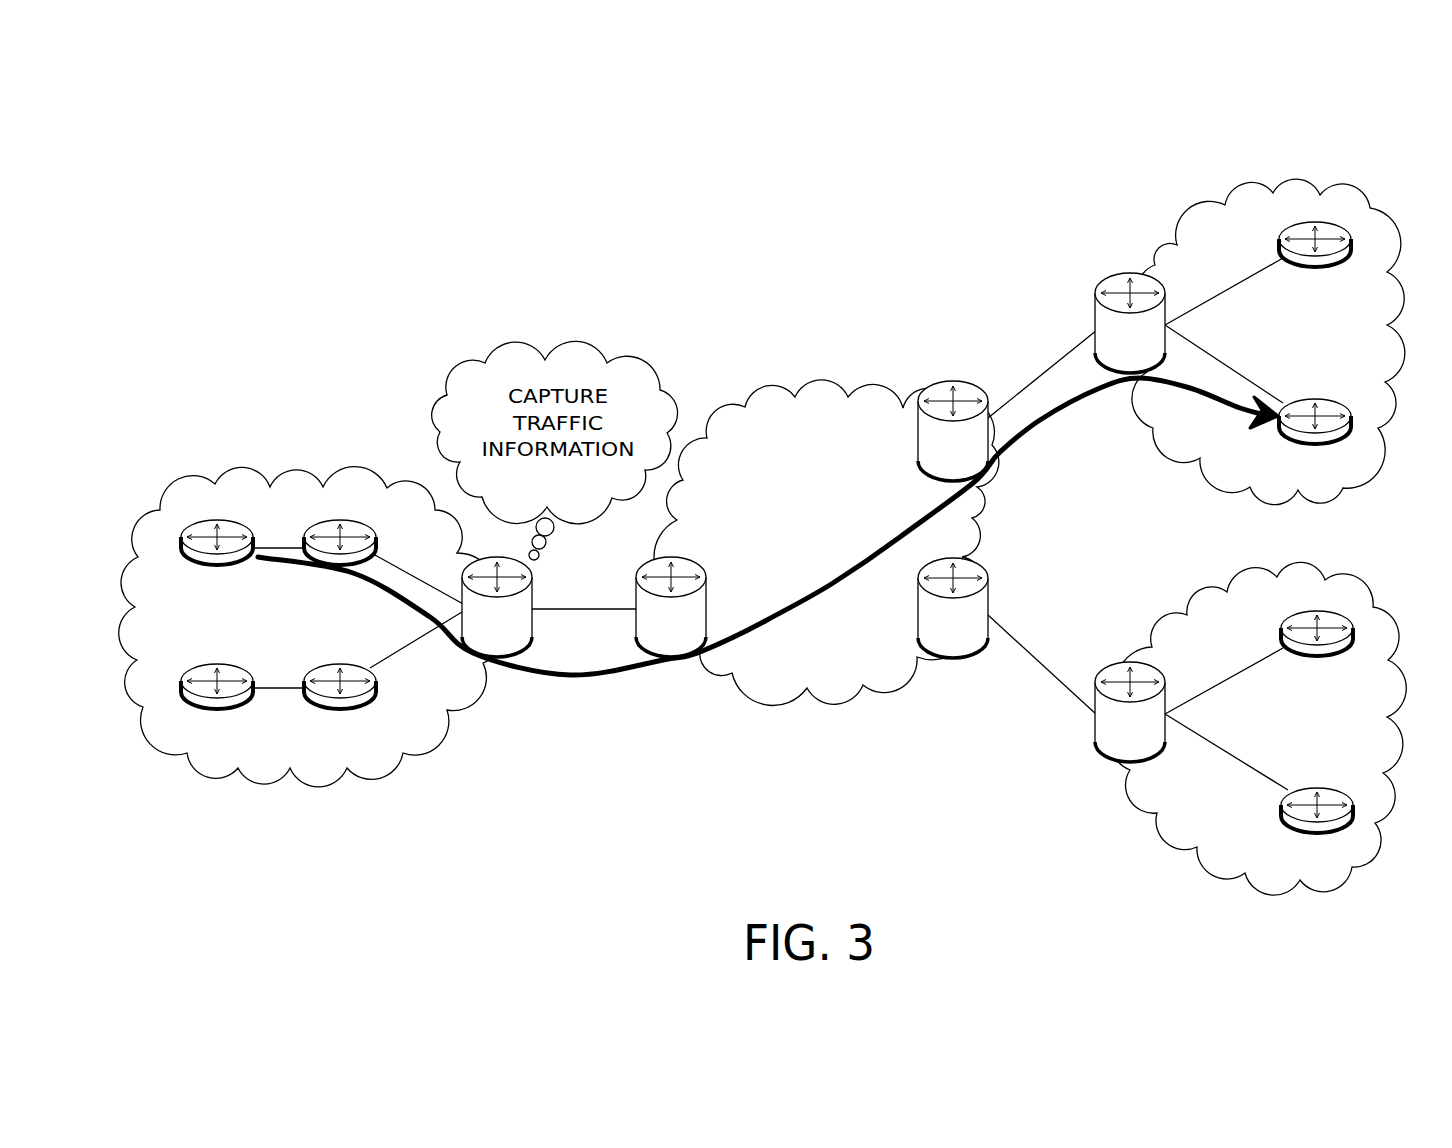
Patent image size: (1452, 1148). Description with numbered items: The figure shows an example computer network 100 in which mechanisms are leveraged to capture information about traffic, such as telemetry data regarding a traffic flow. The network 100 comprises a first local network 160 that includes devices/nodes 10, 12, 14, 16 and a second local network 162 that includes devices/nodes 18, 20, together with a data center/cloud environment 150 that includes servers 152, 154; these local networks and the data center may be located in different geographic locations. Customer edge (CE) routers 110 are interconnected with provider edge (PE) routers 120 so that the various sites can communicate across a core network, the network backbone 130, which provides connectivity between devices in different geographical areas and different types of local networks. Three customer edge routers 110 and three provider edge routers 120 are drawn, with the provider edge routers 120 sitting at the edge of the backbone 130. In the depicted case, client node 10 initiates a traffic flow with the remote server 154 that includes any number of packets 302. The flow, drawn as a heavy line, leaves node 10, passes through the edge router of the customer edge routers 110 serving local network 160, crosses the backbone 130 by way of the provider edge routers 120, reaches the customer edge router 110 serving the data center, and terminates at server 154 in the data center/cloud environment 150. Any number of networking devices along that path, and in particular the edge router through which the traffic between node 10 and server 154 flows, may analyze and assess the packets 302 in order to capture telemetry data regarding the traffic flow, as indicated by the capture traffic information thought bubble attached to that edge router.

The computer network 100 is at (1357, 88).
The client node 10 is at (217, 560).
The device/node 12 is at (340, 560).
The device/node 14 is at (217, 703).
The device/node 16 is at (340, 703).
The device/node 18 is at (1317, 826).
The device/node 20 is at (1317, 650).
The customer edge (CE) router 110 is at (481, 646).
The provider edge (PE) router 120 is at (655, 646).
The network backbone 130 is at (798, 546).
The data center/cloud environment 150 is at (1227, 193).
The server 152 is at (1315, 262).
The remote server 154 is at (1315, 438).
The local network 160 is at (363, 791).
The local network 162 is at (1145, 814).
The packets 302 is at (614, 691).